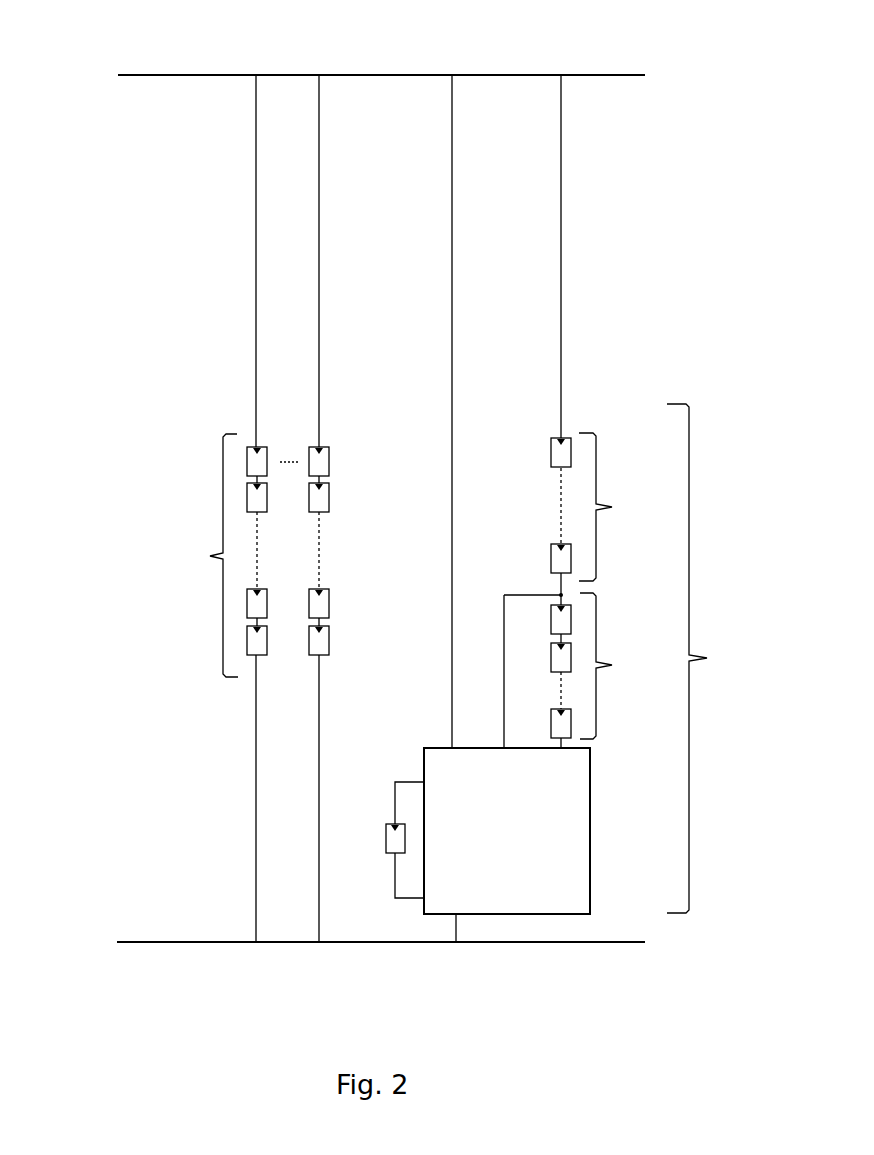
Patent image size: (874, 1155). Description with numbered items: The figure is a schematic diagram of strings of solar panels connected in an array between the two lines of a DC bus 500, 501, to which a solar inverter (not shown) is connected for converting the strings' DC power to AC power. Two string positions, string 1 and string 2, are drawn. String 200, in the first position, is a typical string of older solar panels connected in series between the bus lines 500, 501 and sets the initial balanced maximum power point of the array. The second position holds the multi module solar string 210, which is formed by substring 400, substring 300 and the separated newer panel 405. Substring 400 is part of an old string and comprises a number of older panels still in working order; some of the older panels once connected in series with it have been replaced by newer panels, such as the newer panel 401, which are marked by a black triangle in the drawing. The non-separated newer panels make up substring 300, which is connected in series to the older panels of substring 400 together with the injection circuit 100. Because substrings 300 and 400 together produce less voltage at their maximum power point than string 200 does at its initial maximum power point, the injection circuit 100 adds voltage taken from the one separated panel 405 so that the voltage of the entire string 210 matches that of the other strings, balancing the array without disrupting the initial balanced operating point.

The DC bus line 500 is at (118, 75).
The DC bus line 501 is at (122, 942).
The string 1 is at (287, 489).
The string 2 is at (506, 392).
The string 200 is at (248, 555).
The substring 400 is at (608, 514).
The newer panel 401 is at (558, 622).
The substring 300 is at (603, 670).
The multi module solar string 210 is at (711, 658).
The injection circuit 100 is at (565, 810).
The newer panel 405 is at (392, 830).